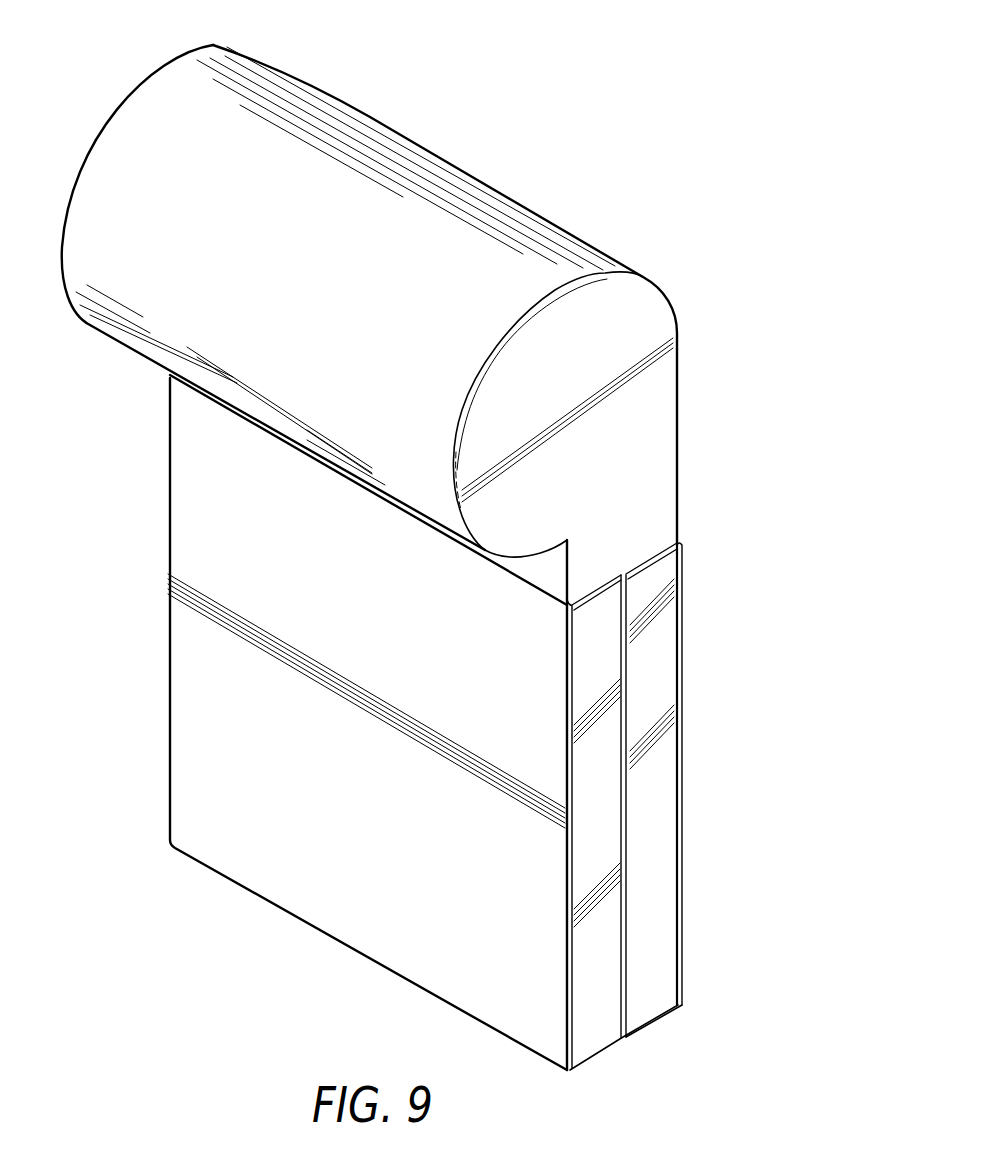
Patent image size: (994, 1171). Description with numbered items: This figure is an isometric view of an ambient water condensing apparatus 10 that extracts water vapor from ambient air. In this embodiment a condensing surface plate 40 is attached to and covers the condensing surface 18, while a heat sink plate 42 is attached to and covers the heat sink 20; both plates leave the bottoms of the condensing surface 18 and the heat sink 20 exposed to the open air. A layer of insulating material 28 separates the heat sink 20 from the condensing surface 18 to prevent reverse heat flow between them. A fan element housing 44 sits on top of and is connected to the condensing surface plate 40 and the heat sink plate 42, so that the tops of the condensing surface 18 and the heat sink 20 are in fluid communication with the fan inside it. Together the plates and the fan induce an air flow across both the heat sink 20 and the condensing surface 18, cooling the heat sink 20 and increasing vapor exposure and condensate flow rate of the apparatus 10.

The ambient water condensing apparatus 10 is at (592, 60).
The fan element housing 44 is at (563, 238).
The heat sink plate 42 is at (195, 773).
The condensing surface plate 40 is at (683, 830).
The heat sink 20 is at (603, 842).
The condensing surface 18 is at (660, 792).
The insulating material 28 is at (628, 1008).